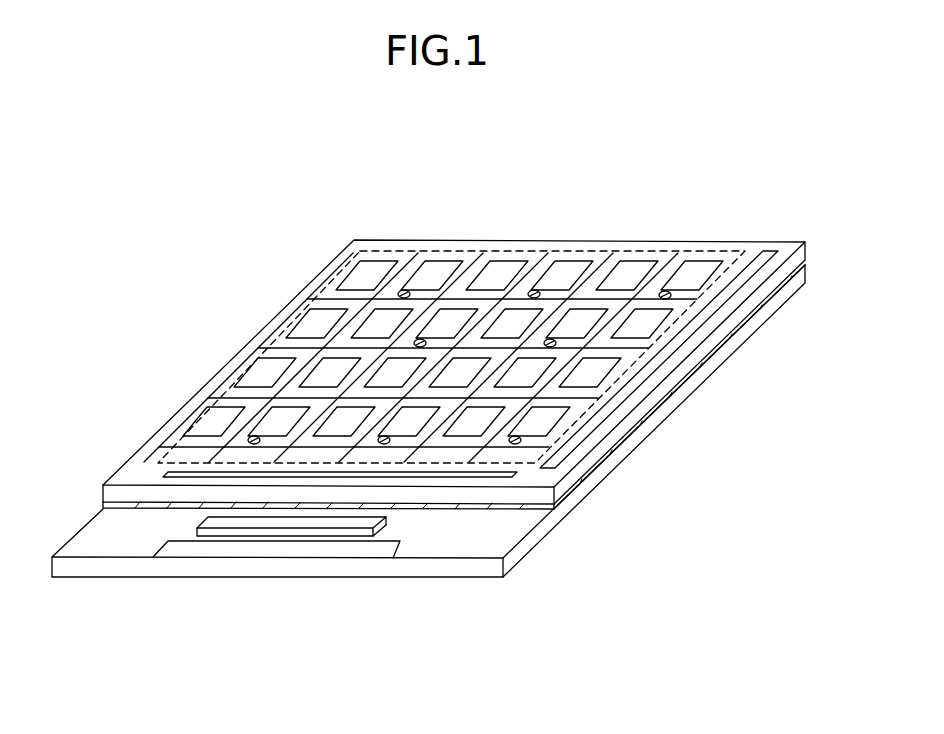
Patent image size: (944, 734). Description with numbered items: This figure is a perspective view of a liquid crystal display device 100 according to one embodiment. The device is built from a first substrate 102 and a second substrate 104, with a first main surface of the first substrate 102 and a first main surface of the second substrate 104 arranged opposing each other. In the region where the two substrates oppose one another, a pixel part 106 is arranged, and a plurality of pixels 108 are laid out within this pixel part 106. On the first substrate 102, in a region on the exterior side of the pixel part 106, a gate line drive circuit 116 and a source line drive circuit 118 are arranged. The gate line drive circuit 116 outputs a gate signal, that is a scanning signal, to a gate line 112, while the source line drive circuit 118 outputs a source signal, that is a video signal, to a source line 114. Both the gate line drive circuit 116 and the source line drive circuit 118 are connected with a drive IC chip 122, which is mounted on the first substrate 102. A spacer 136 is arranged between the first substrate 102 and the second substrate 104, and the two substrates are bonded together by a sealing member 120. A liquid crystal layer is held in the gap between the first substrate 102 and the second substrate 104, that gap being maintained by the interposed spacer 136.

The liquid crystal display device 100 is at (661, 164).
The first substrate 102 is at (540, 540).
The second substrate 104 is at (625, 428).
The pixel part 106 is at (527, 250).
The pixels 108 is at (447, 261).
The gate line 112 is at (325, 297).
The source line 114 is at (277, 382).
The gate line drive circuit 116 is at (800, 240).
The source line drive circuit 118 is at (179, 478).
The sealing member 120 is at (700, 365).
The drive IC chip 122 is at (320, 530).
The spacer 136 is at (403, 286).